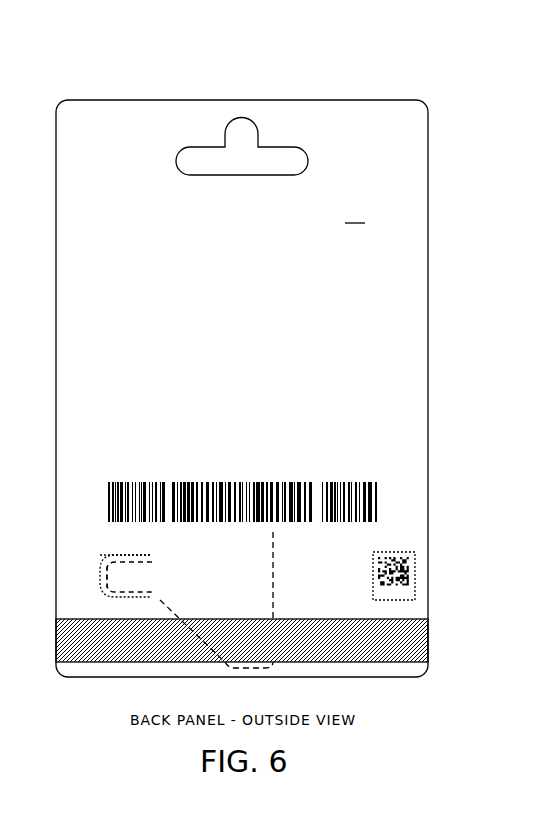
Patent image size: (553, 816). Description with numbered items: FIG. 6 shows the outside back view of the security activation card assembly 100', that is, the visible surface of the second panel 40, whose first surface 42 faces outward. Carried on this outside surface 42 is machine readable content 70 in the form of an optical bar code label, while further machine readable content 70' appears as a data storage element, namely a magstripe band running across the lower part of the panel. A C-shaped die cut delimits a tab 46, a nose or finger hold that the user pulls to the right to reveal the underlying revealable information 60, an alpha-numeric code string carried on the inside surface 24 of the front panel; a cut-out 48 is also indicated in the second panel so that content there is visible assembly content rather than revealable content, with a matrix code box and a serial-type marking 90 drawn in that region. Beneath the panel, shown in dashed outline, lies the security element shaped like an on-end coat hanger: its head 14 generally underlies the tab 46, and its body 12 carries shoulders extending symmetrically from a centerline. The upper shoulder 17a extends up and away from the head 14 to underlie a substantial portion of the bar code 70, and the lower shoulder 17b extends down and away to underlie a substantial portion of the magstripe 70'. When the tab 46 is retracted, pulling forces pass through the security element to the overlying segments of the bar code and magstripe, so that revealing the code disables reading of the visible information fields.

The security activation/transaction card assembly 100' is at (286, 368).
The second panel 40 is at (417, 312).
The second panel first surface 42 is at (355, 213).
The machine readable content 70 is at (287, 523).
The further machine readable content 70' is at (265, 640).
The upper shoulder 17a is at (167, 548).
The lower shoulder 17b is at (160, 600).
The body 12 is at (168, 553).
The head 14 is at (107, 580).
The tab 46 is at (107, 556).
The revealable information 60 is at (283, 571).
The first panel second surface 24 is at (373, 562).
The cut-out 48 is at (415, 566).
The code serial number 90 is at (373, 598).